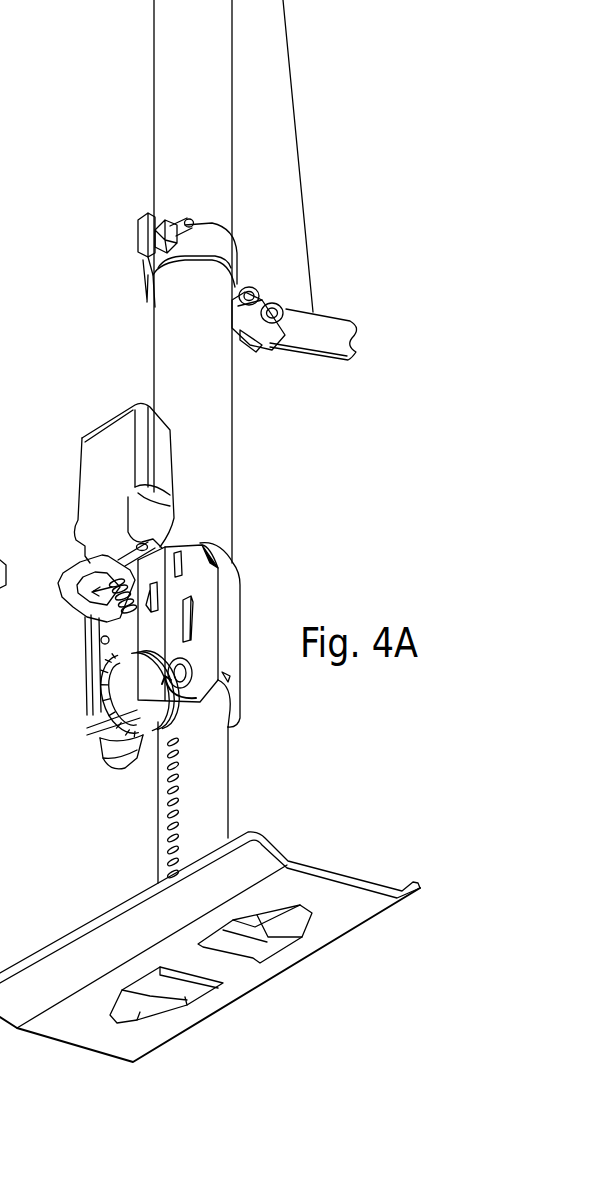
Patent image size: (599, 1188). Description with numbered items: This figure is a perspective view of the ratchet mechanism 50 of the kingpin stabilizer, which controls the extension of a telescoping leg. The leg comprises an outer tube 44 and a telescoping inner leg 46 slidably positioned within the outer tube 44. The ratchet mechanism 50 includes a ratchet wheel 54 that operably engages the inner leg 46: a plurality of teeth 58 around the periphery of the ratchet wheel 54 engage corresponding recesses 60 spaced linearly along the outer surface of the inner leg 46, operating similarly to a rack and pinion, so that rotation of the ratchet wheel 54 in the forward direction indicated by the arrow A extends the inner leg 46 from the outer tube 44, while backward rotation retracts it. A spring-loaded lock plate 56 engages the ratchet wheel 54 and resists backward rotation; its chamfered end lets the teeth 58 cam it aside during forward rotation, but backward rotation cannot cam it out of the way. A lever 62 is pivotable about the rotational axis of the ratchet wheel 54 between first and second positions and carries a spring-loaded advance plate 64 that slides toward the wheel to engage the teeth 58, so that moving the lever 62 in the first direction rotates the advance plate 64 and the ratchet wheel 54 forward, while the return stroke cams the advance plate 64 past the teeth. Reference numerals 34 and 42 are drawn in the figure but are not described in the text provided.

The frame member 34 is at (10, 556).
The clamp 42 is at (178, 286).
The outer tube 44 is at (220, 458).
The telescoping inner leg 46 is at (228, 805).
The ratchet mechanism 50 is at (44, 475).
The ratchet wheel 54 is at (117, 687).
The spring-loaded lock plate 56 is at (192, 622).
The teeth 58 is at (153, 742).
The recesses 60 is at (178, 812).
The lever 62 is at (110, 425).
The spring-loaded advance plate 64 is at (125, 630).
The forward rotation direction arrow A is at (160, 740).